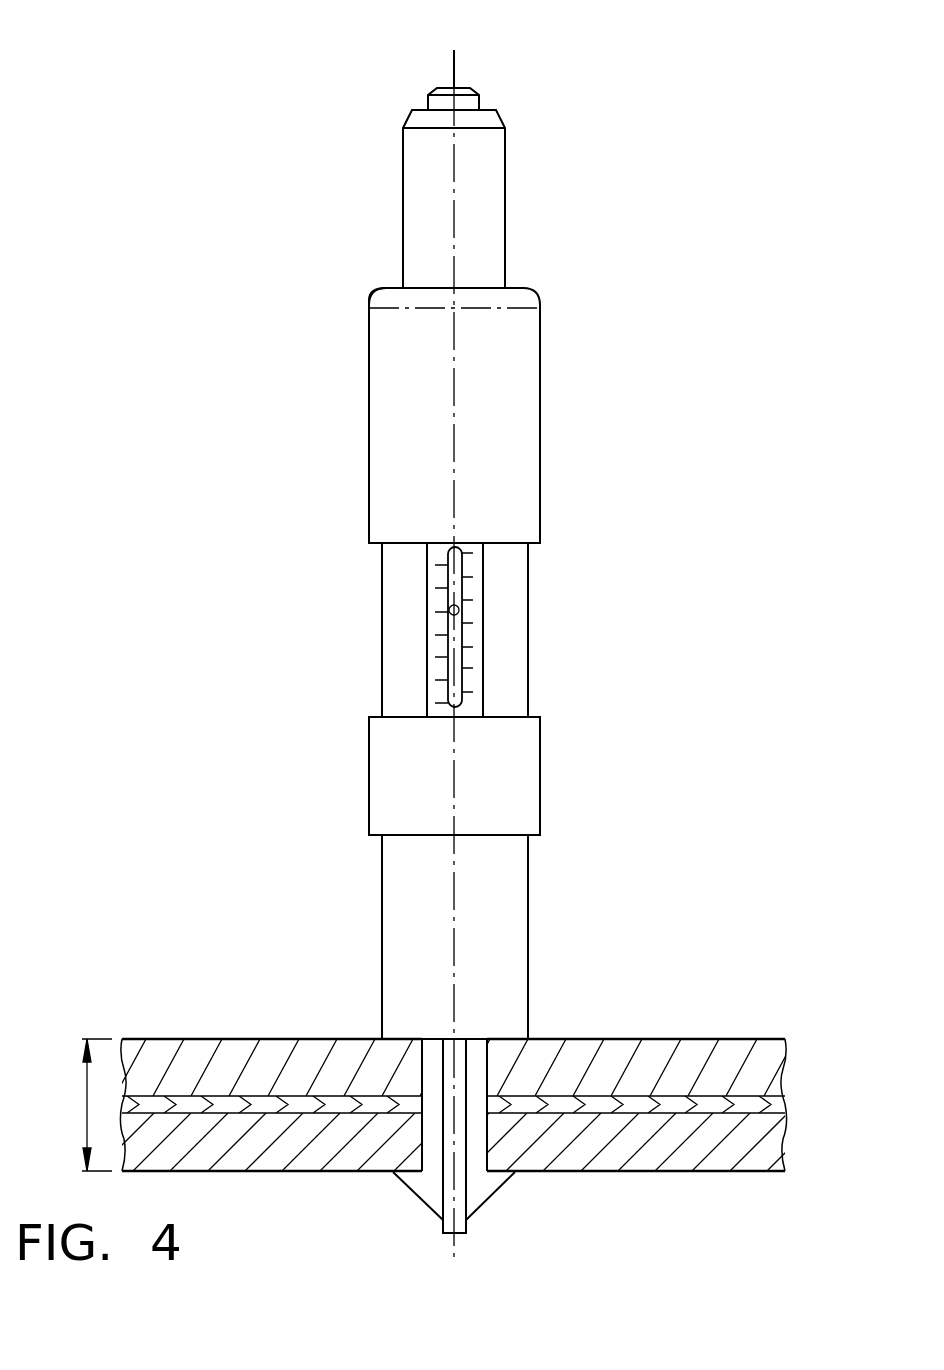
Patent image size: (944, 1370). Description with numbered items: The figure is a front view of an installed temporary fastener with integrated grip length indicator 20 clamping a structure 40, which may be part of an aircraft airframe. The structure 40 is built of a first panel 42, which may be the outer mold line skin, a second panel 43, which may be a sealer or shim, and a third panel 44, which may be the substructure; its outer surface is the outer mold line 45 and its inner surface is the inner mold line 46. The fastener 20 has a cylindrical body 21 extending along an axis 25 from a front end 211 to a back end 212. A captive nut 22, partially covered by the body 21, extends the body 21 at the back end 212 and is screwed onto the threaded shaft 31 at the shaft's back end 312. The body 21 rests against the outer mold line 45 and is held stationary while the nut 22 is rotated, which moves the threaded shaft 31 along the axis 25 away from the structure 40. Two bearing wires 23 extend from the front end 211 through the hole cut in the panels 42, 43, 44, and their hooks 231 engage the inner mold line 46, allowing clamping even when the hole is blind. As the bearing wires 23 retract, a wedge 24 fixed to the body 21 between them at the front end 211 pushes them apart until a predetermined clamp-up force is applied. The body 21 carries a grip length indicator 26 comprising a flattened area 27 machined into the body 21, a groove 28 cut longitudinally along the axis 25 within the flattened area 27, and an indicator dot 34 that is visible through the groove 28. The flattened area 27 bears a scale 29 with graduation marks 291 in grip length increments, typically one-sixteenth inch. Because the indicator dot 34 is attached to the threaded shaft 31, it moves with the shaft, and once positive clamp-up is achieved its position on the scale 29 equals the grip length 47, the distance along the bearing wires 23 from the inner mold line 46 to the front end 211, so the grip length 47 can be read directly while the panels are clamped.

The temporary fastener with integrated grip length indicator 20 is at (604, 486).
The body 21 is at (433, 395).
The nut 22 is at (506, 208).
The bearing wires 23 is at (422, 1080).
The wedge 24 is at (462, 1226).
The axis 25 is at (452, 62).
The grip length indicator 26 is at (336, 591).
The flattened area 27 is at (473, 612).
The groove 28 is at (462, 562).
The scale 29 is at (442, 565).
The threaded shaft 31 is at (428, 102).
The indicator dot 34 is at (449, 612).
The structure 40 is at (807, 1059).
The first panel 42 is at (240, 1048).
The second panel 43 is at (753, 1110).
The third panel 44 is at (298, 1150).
The outer mold line 45 is at (160, 1038).
The inner mold line 46 is at (222, 1172).
The grip length 47 is at (87, 1100).
The front end 211 is at (386, 1040).
The back end 212 is at (393, 287).
The hooks 231 is at (415, 1180).
The graduation marks 291 is at (470, 670).
The back end 312 is at (464, 88).